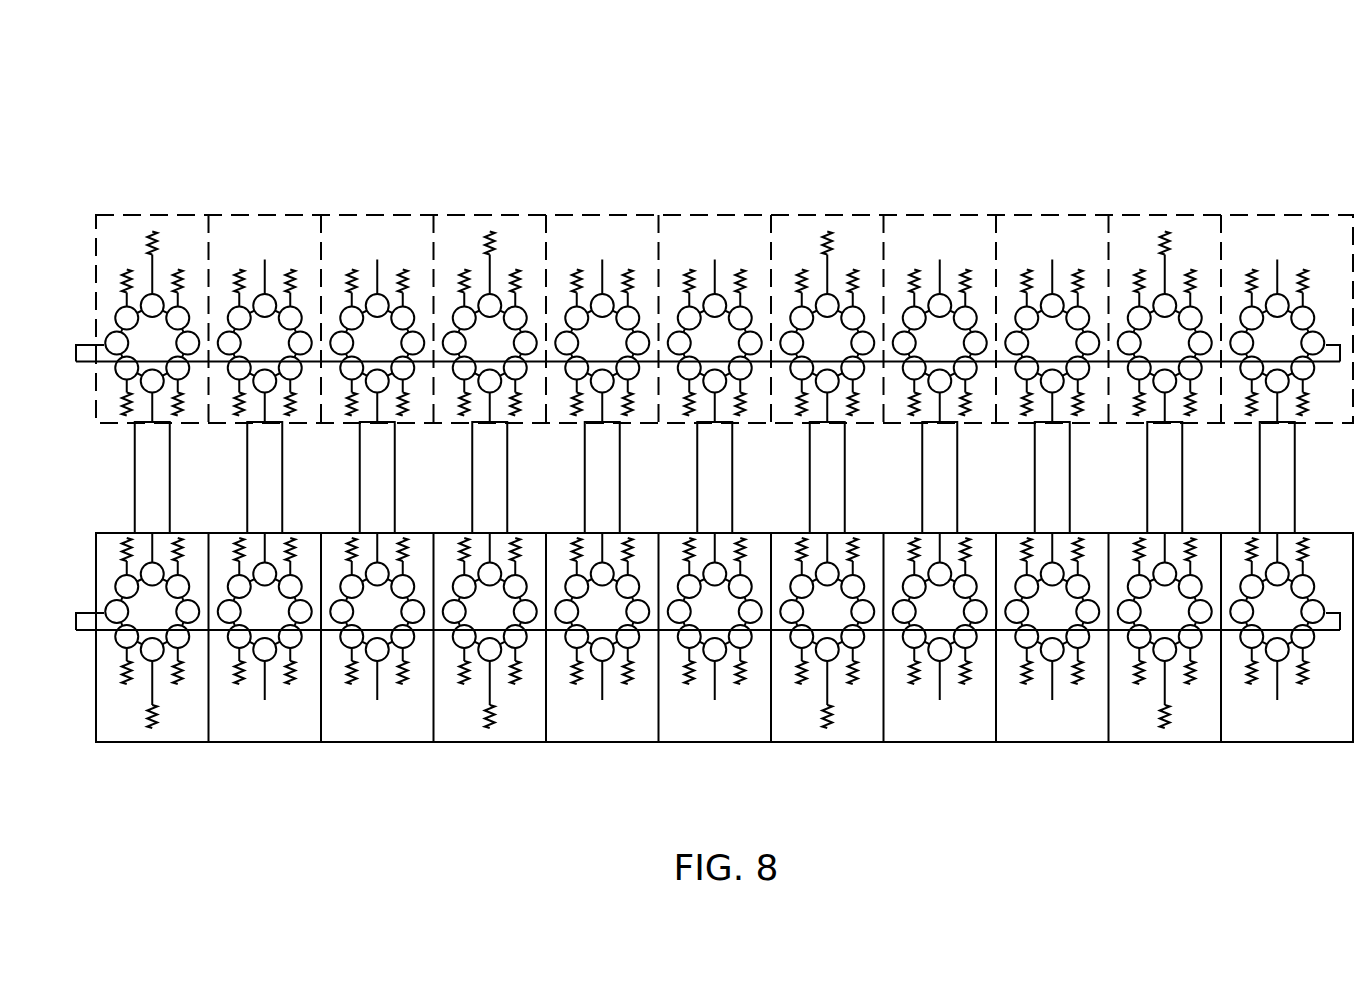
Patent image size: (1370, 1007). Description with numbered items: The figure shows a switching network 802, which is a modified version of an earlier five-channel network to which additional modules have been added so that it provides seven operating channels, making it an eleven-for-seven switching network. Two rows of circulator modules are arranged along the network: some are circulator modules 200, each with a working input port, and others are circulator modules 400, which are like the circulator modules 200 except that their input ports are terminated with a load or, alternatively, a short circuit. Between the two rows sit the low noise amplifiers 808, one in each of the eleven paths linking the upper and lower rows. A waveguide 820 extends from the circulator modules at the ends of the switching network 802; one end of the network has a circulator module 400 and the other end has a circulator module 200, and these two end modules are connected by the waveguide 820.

The switching network 802 is at (1208, 87).
The circulator module 400 is at (658, 481).
The circulator module 200 is at (771, 481).
The low noise amplifier (LNA) 808 is at (680, 477).
The waveguide 820 is at (691, 487).